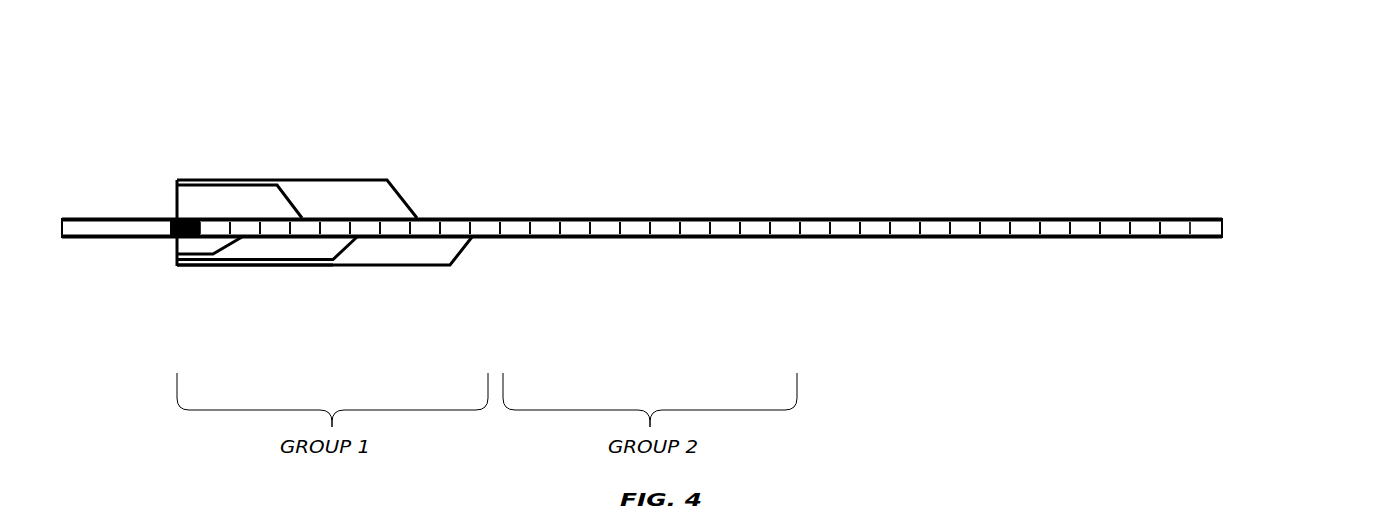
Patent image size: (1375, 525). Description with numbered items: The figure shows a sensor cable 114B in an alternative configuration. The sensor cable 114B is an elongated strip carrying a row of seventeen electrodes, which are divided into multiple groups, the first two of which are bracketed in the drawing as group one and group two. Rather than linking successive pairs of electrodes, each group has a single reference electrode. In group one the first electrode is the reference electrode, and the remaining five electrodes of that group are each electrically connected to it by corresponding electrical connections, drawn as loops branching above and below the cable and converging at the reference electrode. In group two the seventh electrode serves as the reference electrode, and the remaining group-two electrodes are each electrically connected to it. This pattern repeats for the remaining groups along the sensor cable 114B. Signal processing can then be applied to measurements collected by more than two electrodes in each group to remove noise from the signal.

The sensor cable 114B is at (1263, 112).